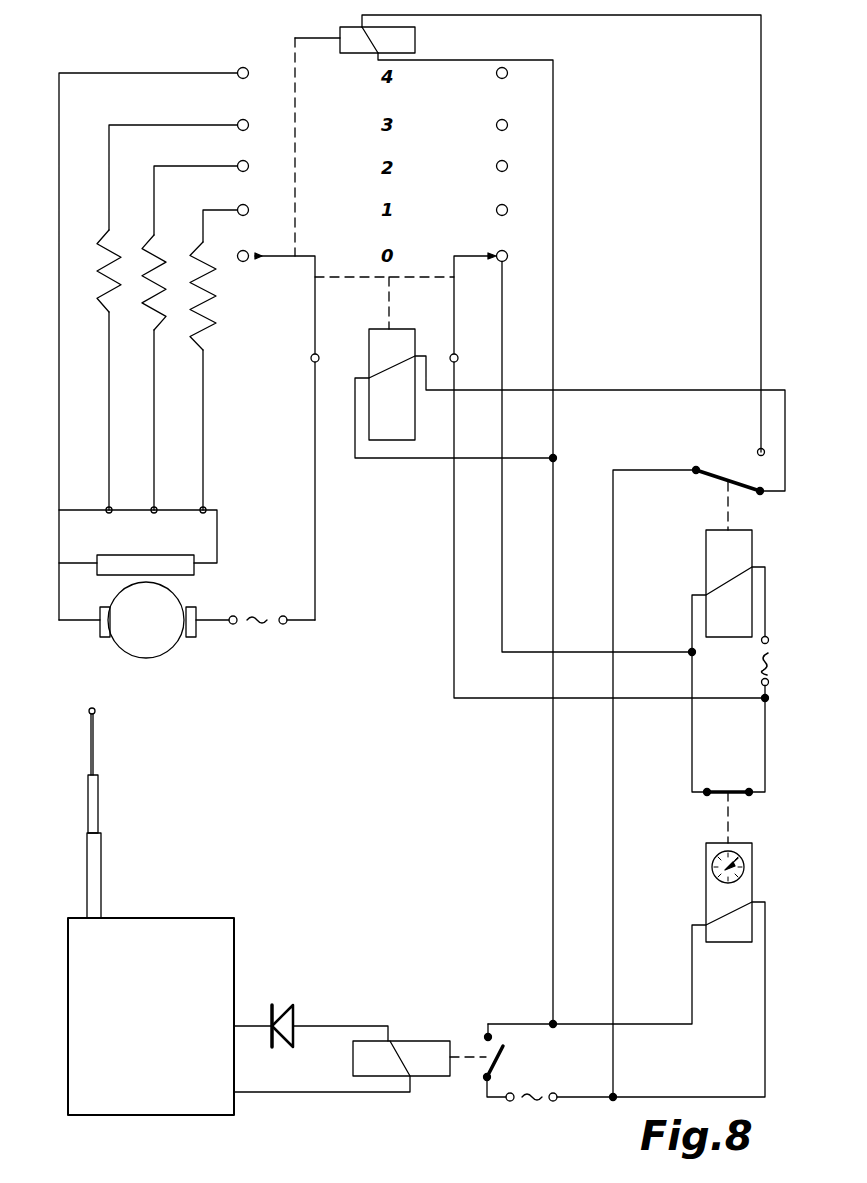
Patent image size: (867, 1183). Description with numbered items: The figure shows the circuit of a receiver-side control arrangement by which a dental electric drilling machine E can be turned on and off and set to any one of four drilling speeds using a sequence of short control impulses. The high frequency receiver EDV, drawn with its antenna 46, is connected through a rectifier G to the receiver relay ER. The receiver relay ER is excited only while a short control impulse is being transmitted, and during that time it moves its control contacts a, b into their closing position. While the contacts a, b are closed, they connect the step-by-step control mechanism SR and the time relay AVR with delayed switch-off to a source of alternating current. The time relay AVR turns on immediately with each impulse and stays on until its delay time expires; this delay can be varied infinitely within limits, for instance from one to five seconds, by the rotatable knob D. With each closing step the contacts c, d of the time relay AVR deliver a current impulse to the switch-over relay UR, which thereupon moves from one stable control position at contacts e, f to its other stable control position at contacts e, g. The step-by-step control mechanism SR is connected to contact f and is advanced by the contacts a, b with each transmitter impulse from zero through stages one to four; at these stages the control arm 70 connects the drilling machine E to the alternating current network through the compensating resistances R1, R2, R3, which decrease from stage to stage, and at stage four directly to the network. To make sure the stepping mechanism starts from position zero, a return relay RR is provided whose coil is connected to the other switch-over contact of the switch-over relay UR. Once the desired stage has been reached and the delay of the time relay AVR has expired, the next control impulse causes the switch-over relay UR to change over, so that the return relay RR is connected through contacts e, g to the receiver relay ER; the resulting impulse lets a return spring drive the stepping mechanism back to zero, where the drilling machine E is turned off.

The compensating resistance R1 is at (195, 376).
The compensating resistance R2 is at (146, 372).
The compensating resistance R3 is at (99, 370).
The dental electric drilling machine E is at (144, 620).
The control arm 70 is at (282, 268).
The return relay RR is at (396, 37).
The step-by-step control mechanism SR is at (405, 409).
The switch-over relay UR is at (722, 550).
The time relay with delayed switch-off AVR is at (728, 896).
The rotatable knob D is at (712, 860).
The receiver relay ER is at (416, 1046).
The switch-over contact G is at (295, 1020).
The high frequency receiver EDV is at (238, 929).
The antenna 46 is at (98, 808).
The control contact a is at (479, 1036).
The control contact b is at (486, 1071).
The contact of time relay c is at (724, 805).
The contact of time relay d is at (749, 805).
The control position contact e is at (656, 773).
The control position contact f is at (734, 481).
The control position contact g is at (753, 451).